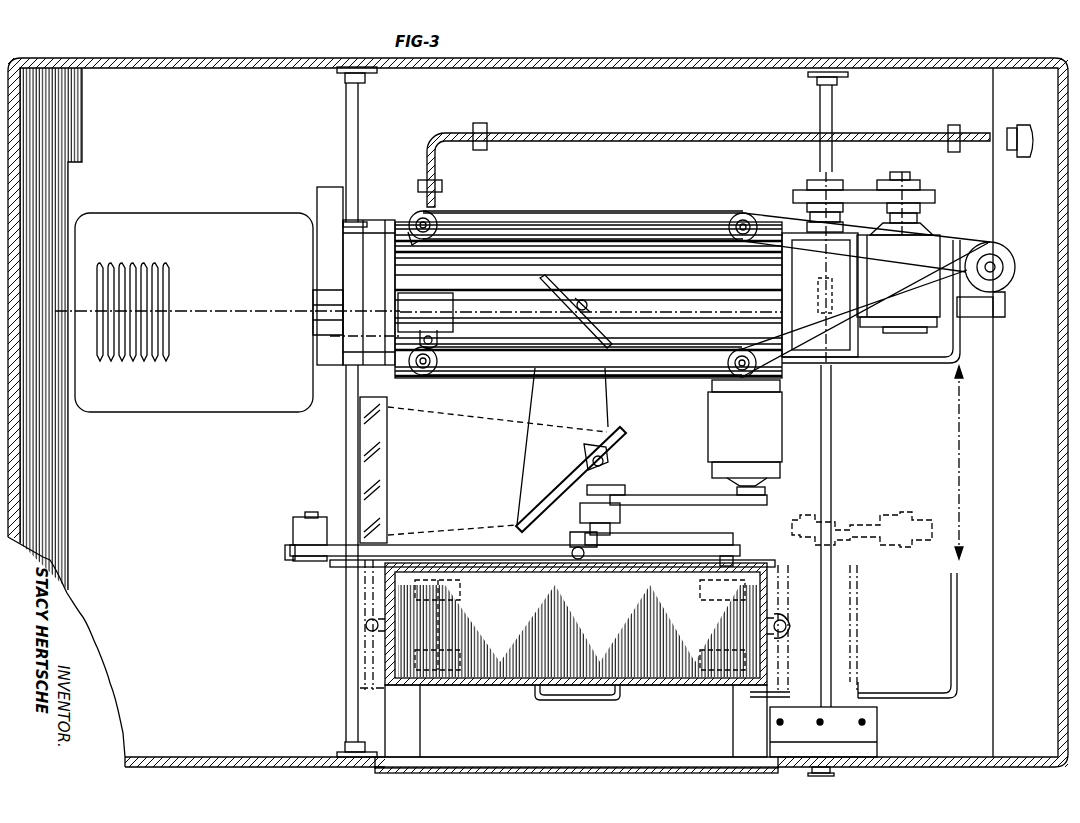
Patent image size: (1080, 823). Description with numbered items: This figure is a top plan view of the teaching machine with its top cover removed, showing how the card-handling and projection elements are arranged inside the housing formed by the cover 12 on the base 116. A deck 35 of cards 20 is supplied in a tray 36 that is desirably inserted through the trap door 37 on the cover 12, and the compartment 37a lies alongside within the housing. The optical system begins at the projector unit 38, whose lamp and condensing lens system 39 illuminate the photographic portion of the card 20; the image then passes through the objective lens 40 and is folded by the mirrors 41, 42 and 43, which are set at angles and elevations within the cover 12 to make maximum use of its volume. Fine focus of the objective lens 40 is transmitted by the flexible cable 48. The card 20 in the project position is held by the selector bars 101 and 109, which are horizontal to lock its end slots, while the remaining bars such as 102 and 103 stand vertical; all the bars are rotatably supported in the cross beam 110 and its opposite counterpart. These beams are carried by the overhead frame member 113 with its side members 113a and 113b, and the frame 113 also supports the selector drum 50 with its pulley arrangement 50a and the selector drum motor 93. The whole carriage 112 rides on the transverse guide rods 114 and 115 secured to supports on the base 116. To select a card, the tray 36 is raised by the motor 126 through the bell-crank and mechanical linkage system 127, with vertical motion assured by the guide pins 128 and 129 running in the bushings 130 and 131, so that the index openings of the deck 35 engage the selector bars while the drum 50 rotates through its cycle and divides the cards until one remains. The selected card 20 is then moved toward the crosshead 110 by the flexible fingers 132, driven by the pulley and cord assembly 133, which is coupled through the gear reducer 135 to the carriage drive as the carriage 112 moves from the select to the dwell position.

The cover 12 is at (200, 761).
The card 20 is at (400, 238).
The deck 35 is at (660, 670).
The tray 36 is at (476, 685).
The trap door 37 is at (562, 766).
The housing compartment 37a is at (1040, 703).
The projector unit 38 is at (245, 369).
The condensing lens system 39 is at (345, 303).
The objective lens 40 is at (424, 347).
The mirror 41 is at (582, 350).
The mirror 42 is at (537, 502).
The mirror 43 is at (390, 470).
The flexible cable 48 is at (708, 138).
The selector drum 50 is at (820, 275).
The drive pulley stack 50a is at (828, 183).
The selector drum motor 93 is at (935, 245).
The selector bar 101 is at (455, 250).
The selector bar 102 is at (488, 262).
The selector bar 103 is at (512, 277).
The selector bar 109 is at (500, 340).
The cross beam 110 is at (380, 253).
The carriage 112 is at (672, 208).
The overhead frame member 113 is at (614, 229).
The side member 113a is at (642, 355).
The side member 113b is at (700, 228).
The guide rod 114 is at (348, 722).
The guide rod 115 is at (832, 458).
The base 116 is at (258, 668).
The motor 126 is at (696, 442).
The mechanical linkage system 127 is at (548, 545).
The guide pin 128 is at (366, 624).
The guide pin 129 is at (792, 630).
The bushing 130 is at (362, 636).
The bushing 131 is at (790, 620).
The flexible fingers 132 is at (405, 230).
The pulley and cord assembly 133 is at (740, 380).
The gear reducer 135 is at (990, 318).